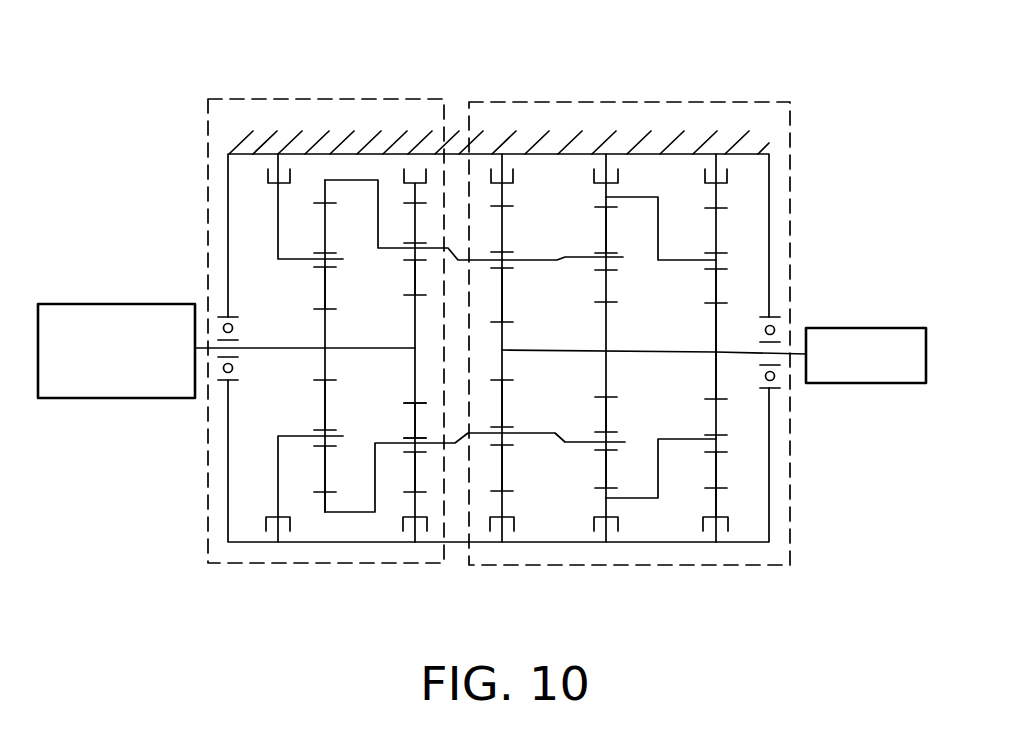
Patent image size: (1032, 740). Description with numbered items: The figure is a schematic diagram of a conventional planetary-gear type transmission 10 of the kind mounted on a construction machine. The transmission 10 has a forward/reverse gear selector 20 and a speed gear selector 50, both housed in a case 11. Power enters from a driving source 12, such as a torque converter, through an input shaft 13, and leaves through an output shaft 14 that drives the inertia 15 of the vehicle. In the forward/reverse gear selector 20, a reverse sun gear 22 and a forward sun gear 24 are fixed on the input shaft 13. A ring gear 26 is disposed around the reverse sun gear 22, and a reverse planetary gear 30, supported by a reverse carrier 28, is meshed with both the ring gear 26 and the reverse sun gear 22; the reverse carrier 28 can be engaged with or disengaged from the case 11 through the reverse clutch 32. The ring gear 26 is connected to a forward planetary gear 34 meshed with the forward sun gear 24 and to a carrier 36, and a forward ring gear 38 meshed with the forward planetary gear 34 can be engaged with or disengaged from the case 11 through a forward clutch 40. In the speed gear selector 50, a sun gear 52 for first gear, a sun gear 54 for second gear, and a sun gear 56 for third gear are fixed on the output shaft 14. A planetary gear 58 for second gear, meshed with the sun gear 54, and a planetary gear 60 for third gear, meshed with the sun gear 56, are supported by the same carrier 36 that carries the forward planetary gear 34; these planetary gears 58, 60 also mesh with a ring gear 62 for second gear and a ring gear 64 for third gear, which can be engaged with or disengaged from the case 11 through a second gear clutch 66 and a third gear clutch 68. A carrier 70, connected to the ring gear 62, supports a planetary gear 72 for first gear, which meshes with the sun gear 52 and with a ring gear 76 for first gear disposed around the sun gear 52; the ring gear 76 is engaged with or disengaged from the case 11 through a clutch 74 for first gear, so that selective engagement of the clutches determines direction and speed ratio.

The planetary-gear type transmission 10 is at (436, 78).
The case 11 is at (352, 138).
The driving source 12 is at (147, 398).
The input shaft 13 is at (262, 352).
The output shaft 14 is at (735, 350).
The inertia of a vehicle 15 is at (863, 385).
The forward/reverse gear selector 20 is at (208, 132).
The reverse sun gear 22 is at (325, 354).
The forward sun gear 24 is at (413, 371).
The ring gear 26 is at (320, 503).
The reverse carrier 28 is at (278, 225).
The reverse planetary gear 30 is at (323, 290).
The reverse clutch 32 is at (268, 172).
The forward planetary gear 34 is at (413, 282).
The carrier 36 is at (457, 243).
The forward ring gear 38 is at (413, 498).
The forward clutch 40 is at (423, 527).
The speed gear selector 50 is at (510, 101).
The sun gear for first gear 52 is at (716, 323).
The sun gear for second gear 54 is at (607, 383).
The sun gear for third gear 56 is at (505, 322).
The planetary gear for second gear 58 is at (607, 418).
The planetary gear for third gear 60 is at (505, 390).
The ring gear for second gear 62 is at (607, 207).
The ring gear for third gear 64 is at (503, 517).
The second gear clutch 66 is at (618, 177).
The third gear clutch 68 is at (512, 525).
The carrier 70 is at (658, 217).
The planetary gear for first gear 72 is at (720, 285).
The clutch for first gear 74 is at (727, 527).
The ring gear for first gear 76 is at (717, 502).